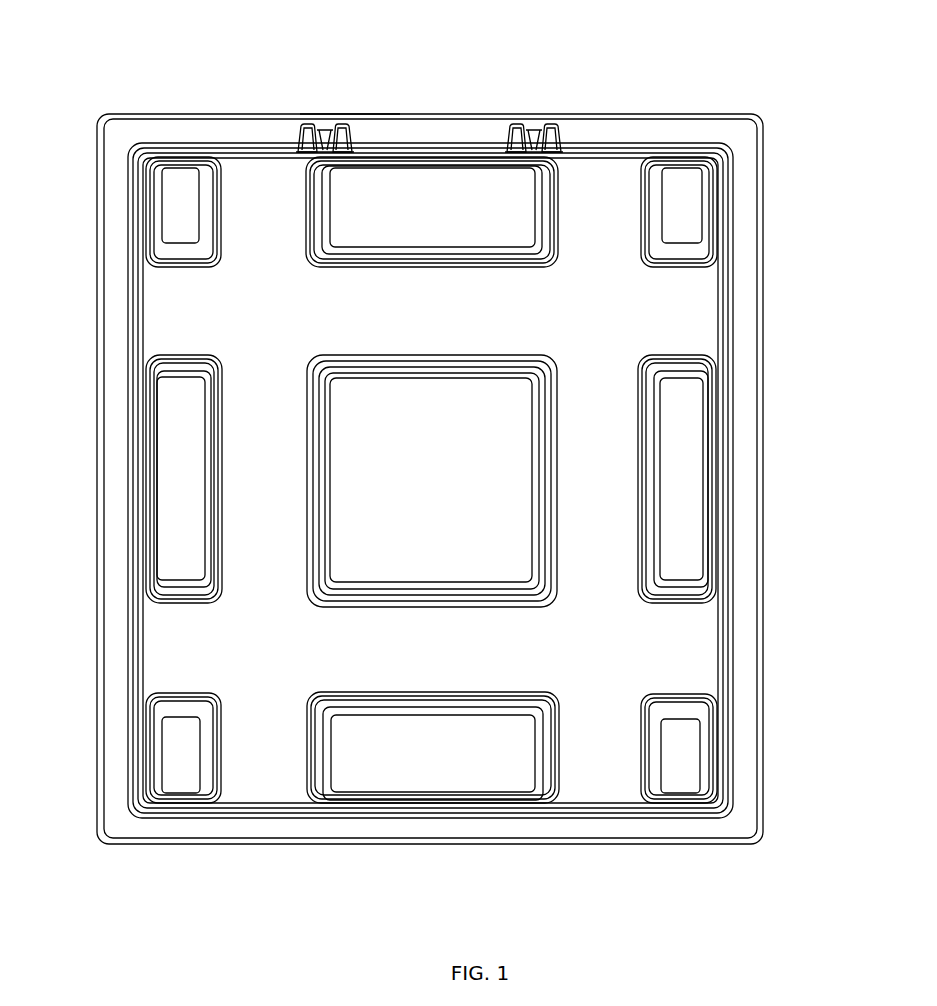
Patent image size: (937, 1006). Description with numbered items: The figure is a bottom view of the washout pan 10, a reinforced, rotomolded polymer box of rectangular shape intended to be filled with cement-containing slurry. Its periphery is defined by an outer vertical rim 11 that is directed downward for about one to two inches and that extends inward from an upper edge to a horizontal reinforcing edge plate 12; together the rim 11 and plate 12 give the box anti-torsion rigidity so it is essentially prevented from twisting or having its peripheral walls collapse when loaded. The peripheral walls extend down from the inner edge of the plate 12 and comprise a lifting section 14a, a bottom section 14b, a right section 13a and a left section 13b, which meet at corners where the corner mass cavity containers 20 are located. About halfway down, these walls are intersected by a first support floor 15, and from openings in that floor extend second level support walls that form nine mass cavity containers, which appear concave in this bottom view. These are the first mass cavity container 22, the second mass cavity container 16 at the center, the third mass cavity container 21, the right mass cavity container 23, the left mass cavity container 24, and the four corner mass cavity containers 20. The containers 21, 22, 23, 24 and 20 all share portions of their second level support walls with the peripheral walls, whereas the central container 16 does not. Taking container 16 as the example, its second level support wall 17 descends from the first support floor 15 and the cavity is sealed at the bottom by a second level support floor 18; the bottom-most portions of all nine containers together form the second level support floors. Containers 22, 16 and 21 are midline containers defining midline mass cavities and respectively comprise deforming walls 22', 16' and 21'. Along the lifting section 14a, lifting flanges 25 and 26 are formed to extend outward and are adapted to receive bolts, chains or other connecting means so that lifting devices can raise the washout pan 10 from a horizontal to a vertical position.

The washout pan 10 is at (347, 108).
The outer vertical rim 11 is at (762, 233).
The horizontal reinforcing edge plate 12 is at (750, 197).
The right section 13a is at (727, 610).
The left section 13b is at (140, 643).
The lifting section 14a is at (613, 150).
The bottom section 14b is at (565, 813).
The first support floor 15 is at (625, 335).
The second mass cavity container 16 is at (300, 442).
The deforming wall 16' is at (432, 442).
The second level support wall 17 is at (315, 492).
The second level support floor 18 is at (395, 412).
The corner mass cavity containers 20 is at (168, 225).
The third mass cavity container 21 is at (433, 785).
The deforming wall 21' is at (433, 718).
The first mass cavity container 22 is at (432, 143).
The deforming wall 22' is at (432, 143).
The right mass cavity container 23 is at (170, 490).
The left mass cavity container 24 is at (685, 460).
The lifting flange 25 is at (300, 120).
The lifting flange 26 is at (562, 127).